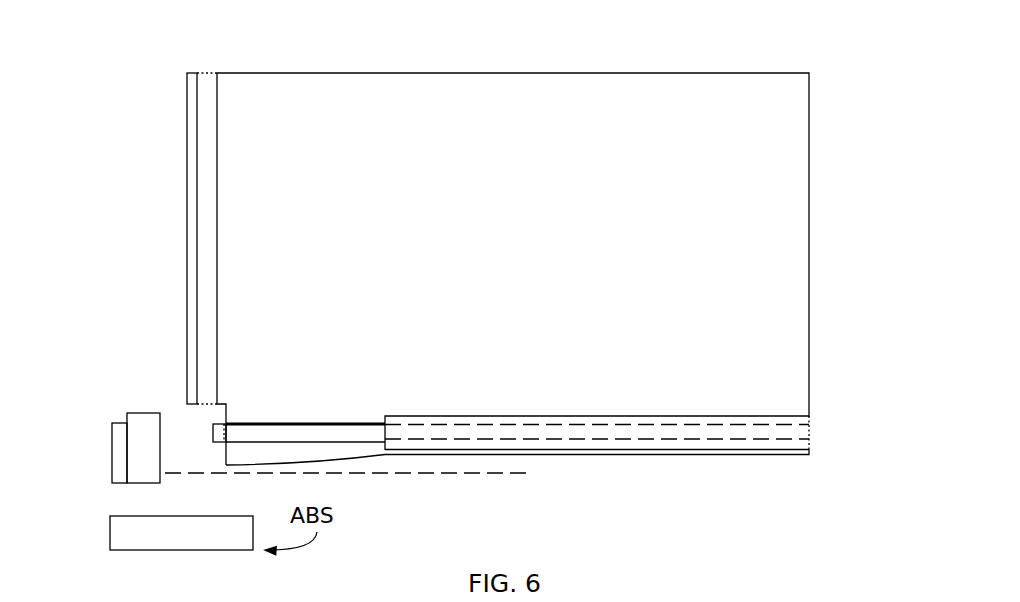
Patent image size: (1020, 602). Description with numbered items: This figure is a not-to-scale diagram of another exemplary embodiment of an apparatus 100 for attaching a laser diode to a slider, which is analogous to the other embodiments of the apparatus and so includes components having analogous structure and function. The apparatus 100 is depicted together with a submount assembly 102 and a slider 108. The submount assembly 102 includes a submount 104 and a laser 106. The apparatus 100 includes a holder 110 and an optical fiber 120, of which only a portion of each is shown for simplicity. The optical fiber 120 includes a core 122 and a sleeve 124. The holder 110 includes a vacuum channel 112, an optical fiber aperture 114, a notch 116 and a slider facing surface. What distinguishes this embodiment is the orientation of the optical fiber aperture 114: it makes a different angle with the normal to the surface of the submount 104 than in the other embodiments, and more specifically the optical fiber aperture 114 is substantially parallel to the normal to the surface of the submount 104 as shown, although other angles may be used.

The apparatus 100 is at (495, 34).
The submount assembly 102 is at (97, 433).
The submount 104 is at (145, 484).
The laser 106 is at (110, 467).
The slider 108 is at (110, 517).
The holder 110 is at (811, 157).
The vacuum channel 112 is at (205, 62).
The optical fiber aperture 114 is at (217, 447).
The notch 116 is at (200, 421).
The optical fiber 120 is at (587, 465).
The core 122 is at (811, 430).
The sleeve 124 is at (690, 451).